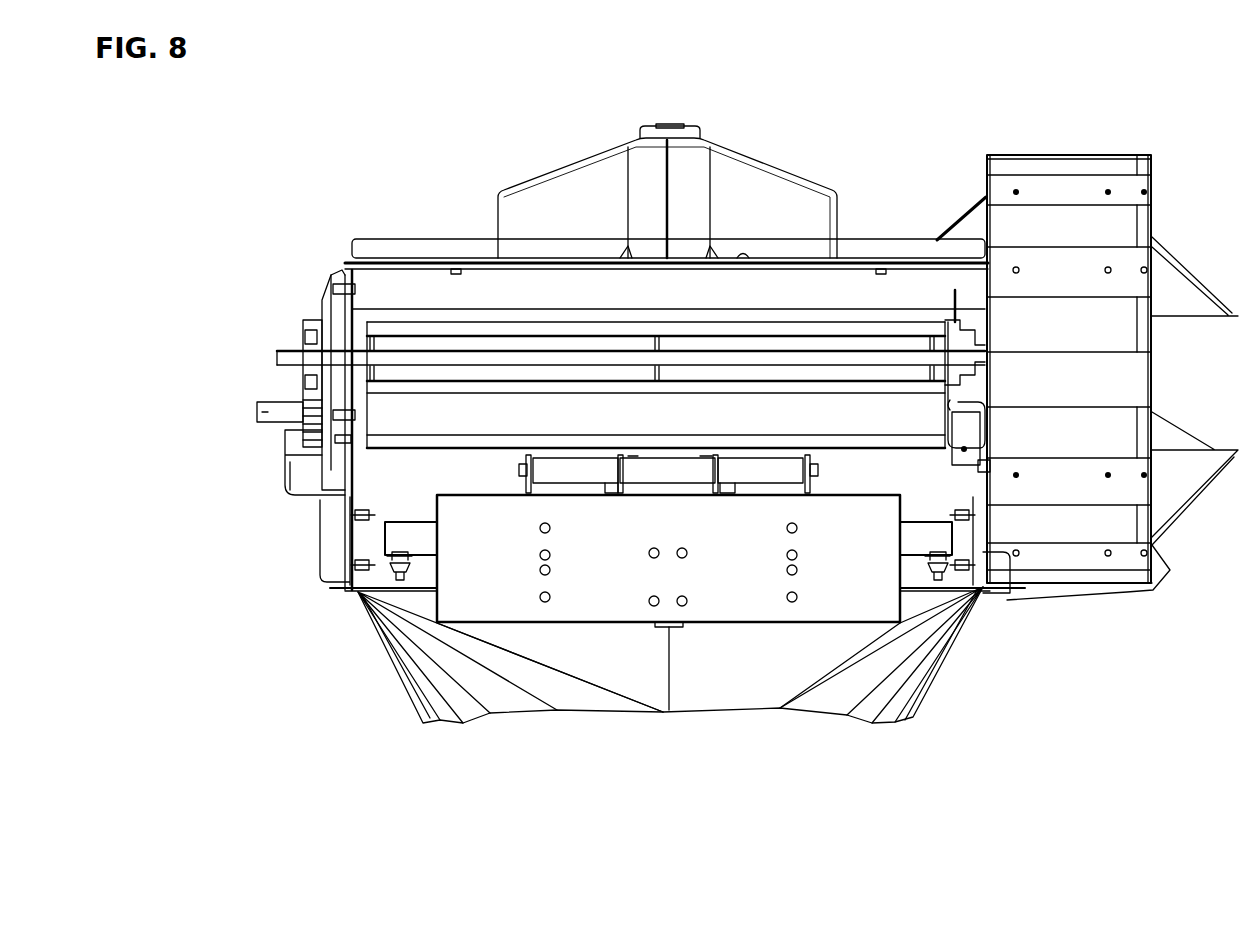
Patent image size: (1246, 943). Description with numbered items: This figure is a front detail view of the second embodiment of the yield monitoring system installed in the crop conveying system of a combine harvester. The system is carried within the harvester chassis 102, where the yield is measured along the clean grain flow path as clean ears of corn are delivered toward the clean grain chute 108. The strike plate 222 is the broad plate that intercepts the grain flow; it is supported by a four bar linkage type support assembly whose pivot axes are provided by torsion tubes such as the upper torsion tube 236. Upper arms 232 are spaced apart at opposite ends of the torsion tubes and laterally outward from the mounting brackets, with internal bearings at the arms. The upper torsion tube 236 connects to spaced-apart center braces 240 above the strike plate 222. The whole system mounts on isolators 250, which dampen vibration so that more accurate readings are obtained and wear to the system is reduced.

The chassis 102 is at (357, 245).
The clean grain chute 108 is at (813, 725).
The strike plate 222 is at (872, 600).
The upper arms 232 is at (523, 486).
The torsion tube 236 is at (572, 468).
The center braces 240 is at (716, 465).
The isolators 250 is at (358, 593).